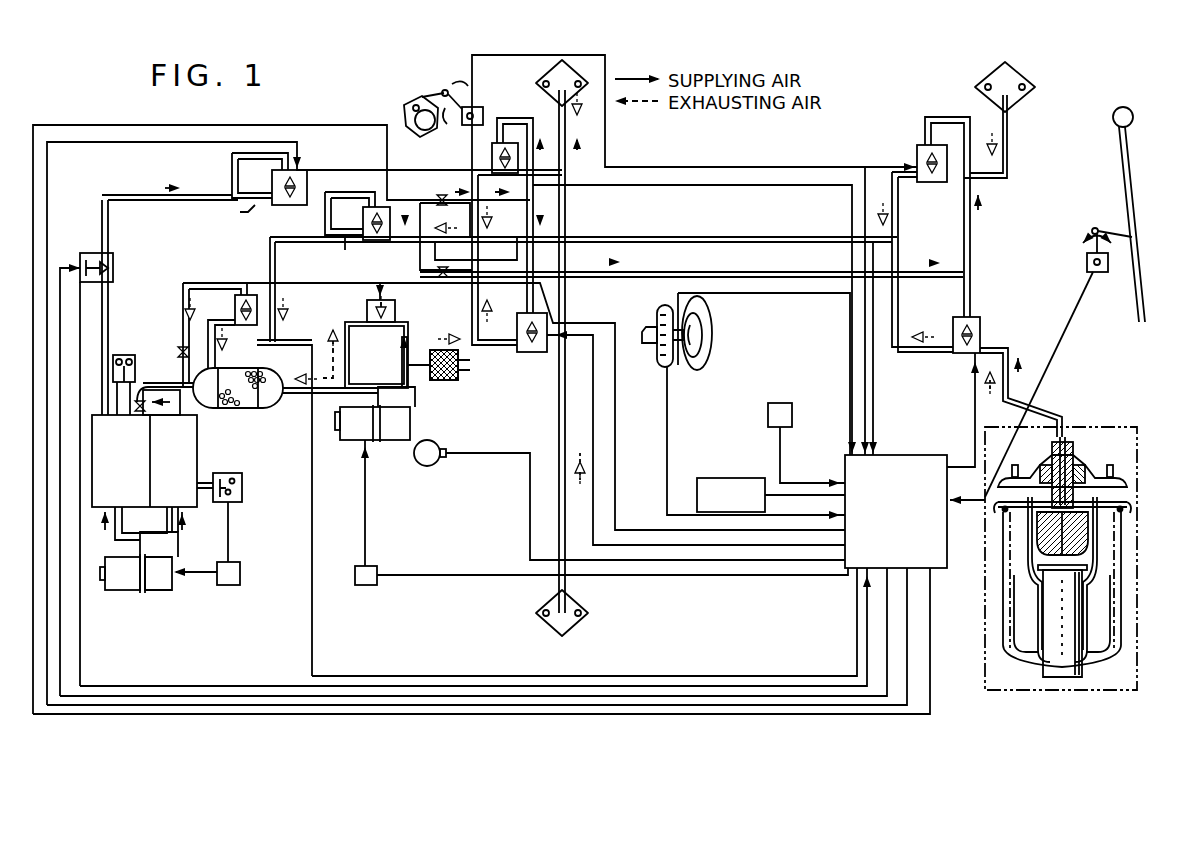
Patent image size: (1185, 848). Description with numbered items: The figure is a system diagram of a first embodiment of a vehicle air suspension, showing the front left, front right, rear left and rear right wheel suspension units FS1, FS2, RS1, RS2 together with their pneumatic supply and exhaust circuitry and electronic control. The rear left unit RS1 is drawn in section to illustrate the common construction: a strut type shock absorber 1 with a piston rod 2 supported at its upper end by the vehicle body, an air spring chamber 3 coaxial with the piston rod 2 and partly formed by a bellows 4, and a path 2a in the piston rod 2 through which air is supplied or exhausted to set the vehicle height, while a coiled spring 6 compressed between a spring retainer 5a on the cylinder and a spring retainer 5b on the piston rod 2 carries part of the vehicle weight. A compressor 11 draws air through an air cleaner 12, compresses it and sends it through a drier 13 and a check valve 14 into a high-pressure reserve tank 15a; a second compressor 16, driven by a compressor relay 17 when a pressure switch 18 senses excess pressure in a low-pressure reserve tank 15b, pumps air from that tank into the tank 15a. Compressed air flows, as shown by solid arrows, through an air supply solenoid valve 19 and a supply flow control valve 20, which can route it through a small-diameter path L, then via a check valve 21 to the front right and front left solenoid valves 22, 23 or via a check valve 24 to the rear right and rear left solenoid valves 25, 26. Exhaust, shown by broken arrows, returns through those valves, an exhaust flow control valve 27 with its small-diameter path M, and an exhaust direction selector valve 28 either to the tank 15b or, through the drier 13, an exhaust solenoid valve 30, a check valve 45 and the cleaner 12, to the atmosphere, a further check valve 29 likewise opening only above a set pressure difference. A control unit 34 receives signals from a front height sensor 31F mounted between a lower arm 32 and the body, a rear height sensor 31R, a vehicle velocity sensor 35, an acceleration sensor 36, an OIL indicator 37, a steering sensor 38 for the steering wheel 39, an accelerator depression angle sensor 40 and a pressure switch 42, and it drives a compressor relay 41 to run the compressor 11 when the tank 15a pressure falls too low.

The strut type shock absorber 1 is at (1058, 667).
The piston rod 2 is at (1058, 553).
The path 2a is at (1067, 442).
The air spring chamber 3 is at (1090, 578).
The bellows 4 is at (1115, 622).
The spring retainer 5a is at (1100, 665).
The spring retainer 5b is at (1125, 497).
The coiled spring 6 is at (1125, 527).
The compressor 11 is at (392, 440).
The air cleaner 12 is at (436, 380).
The drier 13 is at (255, 408).
The check valve 14 is at (185, 412).
The high-pressure reserve tank 15a is at (96, 509).
The low-pressure reserve tank 15b is at (197, 452).
The compressor 16 is at (160, 591).
The compressor relay 17 is at (228, 586).
The pressure switch 18 is at (242, 490).
The air supply solenoid valve 19 is at (113, 268).
The supply flow control valve 20 is at (300, 172).
The check valve 21 is at (438, 197).
The front right solenoid valve 22 is at (490, 155).
The front left solenoid valve 23 is at (528, 352).
The check valve 24 is at (445, 278).
The rear right solenoid valve 25 is at (915, 148).
The rear left solenoid valve 26 is at (981, 326).
The exhaust flow control valve 27 is at (377, 242).
The exhaust direction selector valve 28 is at (235, 312).
The check valve 29 is at (176, 352).
The exhaust solenoid valve 30 is at (365, 342).
The front height sensor 31F is at (483, 113).
The rear height sensor 31R is at (1086, 265).
The front right wheel suspension lower arm 32 is at (416, 104).
The control unit 34 is at (918, 455).
The vehicle velocity sensor 35 is at (662, 368).
The acceleration (G) sensor 36 is at (778, 403).
The indicator (OIL) 37 is at (722, 472).
The steering sensor 38 is at (686, 355).
The steering wheel 39 is at (713, 322).
The accelerator depression angle sensor 40 is at (430, 466).
The compressor relay 41 is at (370, 566).
The pressure switch 42 is at (131, 355).
The check valve 45 is at (408, 346).
The front left wheel suspension unit FS1 is at (585, 618).
The front right wheel suspension unit FS2 is at (546, 80).
The rear left wheel suspension unit RS1 is at (1130, 427).
The rear right wheel suspension unit RS2 is at (1028, 80).
The small-diameter path L is at (245, 220).
The small-diameter path M is at (341, 256).